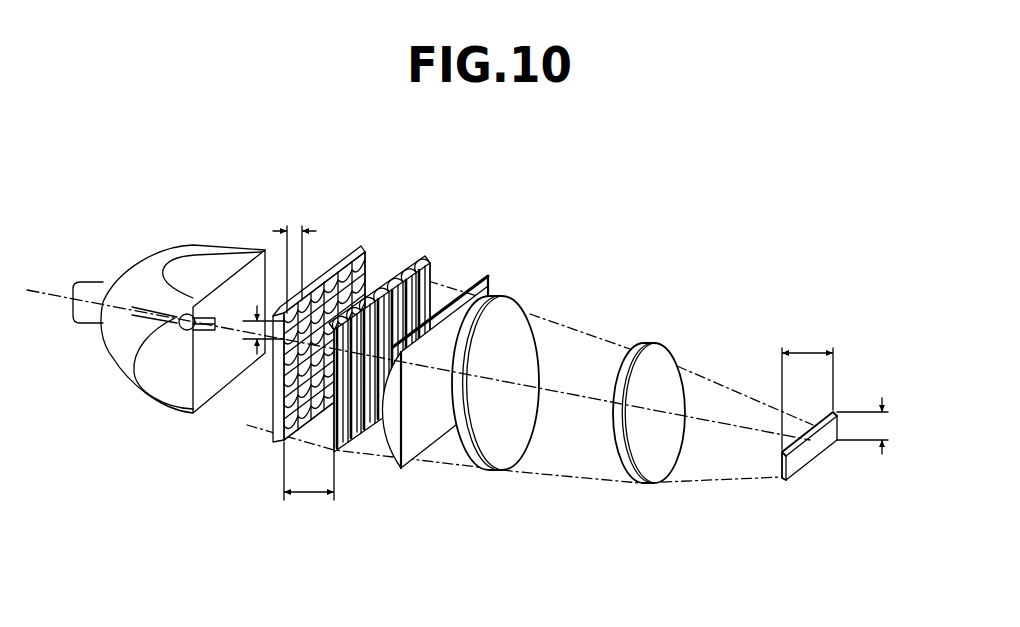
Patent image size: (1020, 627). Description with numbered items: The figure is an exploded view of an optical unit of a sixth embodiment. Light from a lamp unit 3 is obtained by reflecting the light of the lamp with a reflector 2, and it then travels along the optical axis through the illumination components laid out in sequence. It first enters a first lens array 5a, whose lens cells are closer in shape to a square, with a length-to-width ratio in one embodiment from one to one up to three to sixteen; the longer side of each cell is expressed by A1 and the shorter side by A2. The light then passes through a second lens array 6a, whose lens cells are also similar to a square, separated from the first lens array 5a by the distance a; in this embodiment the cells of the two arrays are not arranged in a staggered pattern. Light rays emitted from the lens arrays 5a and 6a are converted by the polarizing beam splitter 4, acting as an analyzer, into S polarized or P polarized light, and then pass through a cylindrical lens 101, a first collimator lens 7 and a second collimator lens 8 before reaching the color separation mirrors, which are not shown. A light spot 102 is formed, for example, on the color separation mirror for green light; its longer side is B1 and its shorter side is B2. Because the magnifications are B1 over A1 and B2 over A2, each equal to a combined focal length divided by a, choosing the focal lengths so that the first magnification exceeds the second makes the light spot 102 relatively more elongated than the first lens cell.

The reflector 2 is at (131, 273).
The lamp unit 3 is at (169, 352).
The polarizing beam splitter 4 is at (407, 317).
The first lens array 5a is at (350, 250).
The second lens array 6a is at (413, 266).
The first collimator lens 7 is at (510, 297).
The second collimator lens 8 is at (662, 343).
The cylindrical lens 101 is at (388, 457).
The light spot 102 is at (800, 472).
The longer side of lens cell of first lens array A1 is at (294, 250).
The shorter side of lens cell of first lens array A2 is at (257, 320).
The distance between first lens array and second lens array a is at (309, 482).
The length of longer side of light spot B1 is at (807, 385).
The length of shorter side of light spot B2 is at (880, 426).